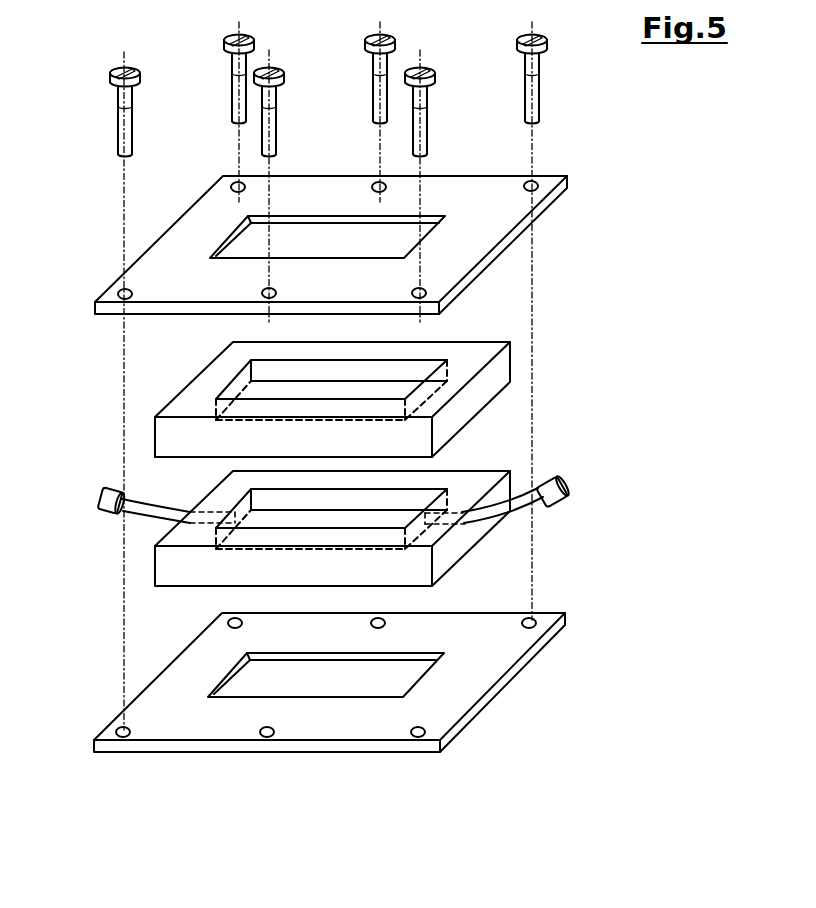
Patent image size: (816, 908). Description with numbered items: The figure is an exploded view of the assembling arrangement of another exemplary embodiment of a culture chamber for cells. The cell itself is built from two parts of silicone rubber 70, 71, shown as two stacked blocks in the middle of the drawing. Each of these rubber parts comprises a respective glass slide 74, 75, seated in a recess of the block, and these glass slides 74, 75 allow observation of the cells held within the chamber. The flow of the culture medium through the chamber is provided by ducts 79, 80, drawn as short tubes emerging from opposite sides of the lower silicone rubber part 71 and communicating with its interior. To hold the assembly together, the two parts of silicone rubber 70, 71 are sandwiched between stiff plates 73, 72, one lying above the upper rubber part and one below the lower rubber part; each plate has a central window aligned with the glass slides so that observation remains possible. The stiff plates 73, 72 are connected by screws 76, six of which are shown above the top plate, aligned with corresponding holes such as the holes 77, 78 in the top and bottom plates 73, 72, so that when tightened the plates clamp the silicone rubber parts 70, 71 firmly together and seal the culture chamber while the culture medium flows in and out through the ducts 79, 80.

The silicone rubber part 70 is at (477, 363).
The silicone rubber part 71 is at (470, 488).
The stiff plate 72 is at (462, 703).
The stiff plate 73 is at (457, 257).
The glass slide 74 is at (275, 522).
The glass slide 75 is at (292, 392).
The screws 76 is at (428, 120).
The hole in top plate 77 is at (537, 177).
The hole in bottom plate 78 is at (535, 610).
The duct 79 is at (153, 513).
The duct 80 is at (517, 522).